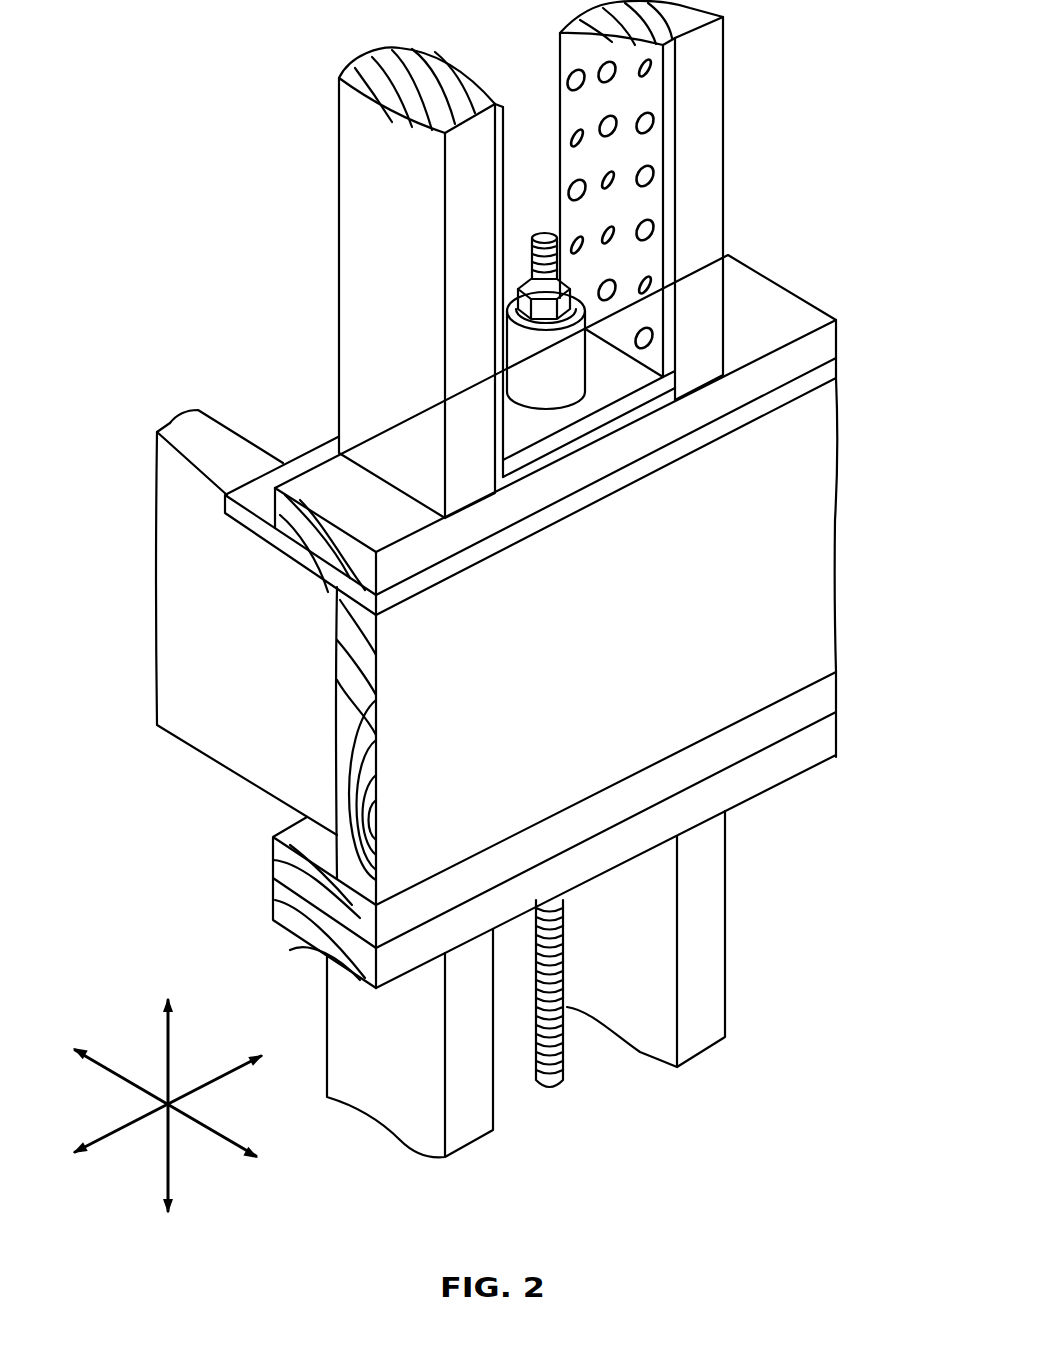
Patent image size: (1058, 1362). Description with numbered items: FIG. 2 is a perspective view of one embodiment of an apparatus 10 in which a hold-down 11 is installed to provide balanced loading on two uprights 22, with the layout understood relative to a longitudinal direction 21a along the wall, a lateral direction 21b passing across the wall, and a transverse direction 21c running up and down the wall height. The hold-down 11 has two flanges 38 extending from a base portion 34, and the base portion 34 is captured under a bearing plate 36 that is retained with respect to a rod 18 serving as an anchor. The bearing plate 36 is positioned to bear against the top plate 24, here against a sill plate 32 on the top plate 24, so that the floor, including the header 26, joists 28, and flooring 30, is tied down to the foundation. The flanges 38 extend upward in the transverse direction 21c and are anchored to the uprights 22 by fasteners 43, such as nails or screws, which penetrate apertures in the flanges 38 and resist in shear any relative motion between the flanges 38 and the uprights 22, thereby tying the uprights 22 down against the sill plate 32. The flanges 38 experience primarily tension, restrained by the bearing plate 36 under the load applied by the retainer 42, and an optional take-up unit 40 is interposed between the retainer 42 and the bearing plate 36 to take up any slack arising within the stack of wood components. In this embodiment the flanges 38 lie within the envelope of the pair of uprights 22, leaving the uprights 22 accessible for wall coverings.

The apparatus 10 is at (211, 76).
The hold-down 11 is at (646, 94).
The rod 18 is at (557, 980).
The longitudinal direction 21a is at (238, 1070).
The lateral direction 21b is at (221, 1142).
The transverse direction 21c is at (170, 1050).
The upright 22 is at (408, 276).
The top plate 24 is at (816, 745).
The header 26 is at (818, 578).
The joists 28 is at (272, 782).
The flooring 30 is at (256, 502).
The sill plate 32 is at (828, 342).
The base portion 34 is at (630, 420).
The bearing plate 36 is at (565, 437).
The flanges 38 is at (673, 205).
The take-up unit 40 is at (560, 378).
The retainer 42 is at (566, 283).
The fasteners 43 is at (651, 180).